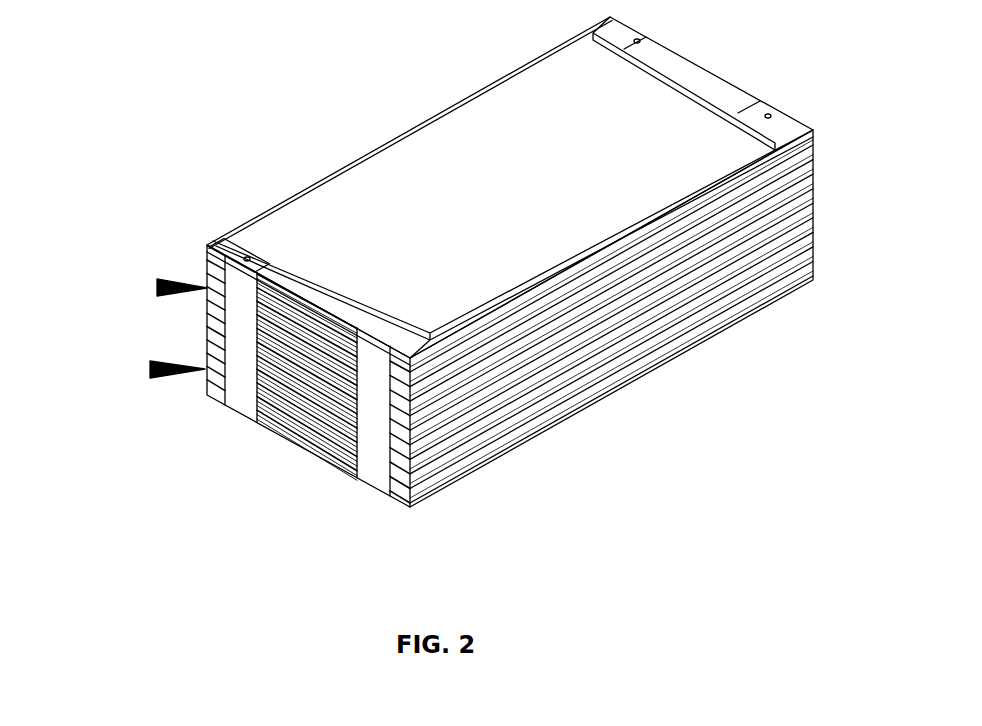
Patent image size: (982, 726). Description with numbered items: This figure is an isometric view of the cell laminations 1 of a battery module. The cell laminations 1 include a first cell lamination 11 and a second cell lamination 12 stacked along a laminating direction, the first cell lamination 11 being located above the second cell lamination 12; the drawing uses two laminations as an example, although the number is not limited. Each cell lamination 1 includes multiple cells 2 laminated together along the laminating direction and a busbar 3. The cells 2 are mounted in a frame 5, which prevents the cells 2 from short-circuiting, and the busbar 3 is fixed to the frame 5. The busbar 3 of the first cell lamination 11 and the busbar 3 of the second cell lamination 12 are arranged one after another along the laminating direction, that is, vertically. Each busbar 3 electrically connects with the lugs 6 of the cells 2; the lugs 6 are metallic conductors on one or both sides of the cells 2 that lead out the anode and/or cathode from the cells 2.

The cell lamination 1 is at (225, 238).
The cell 2 is at (362, 178).
The busbar 3 is at (379, 352).
The frame 5 is at (541, 318).
The lug 6 is at (257, 413).
The first cell lamination 11 is at (157, 290).
The second cell lamination 12 is at (150, 370).